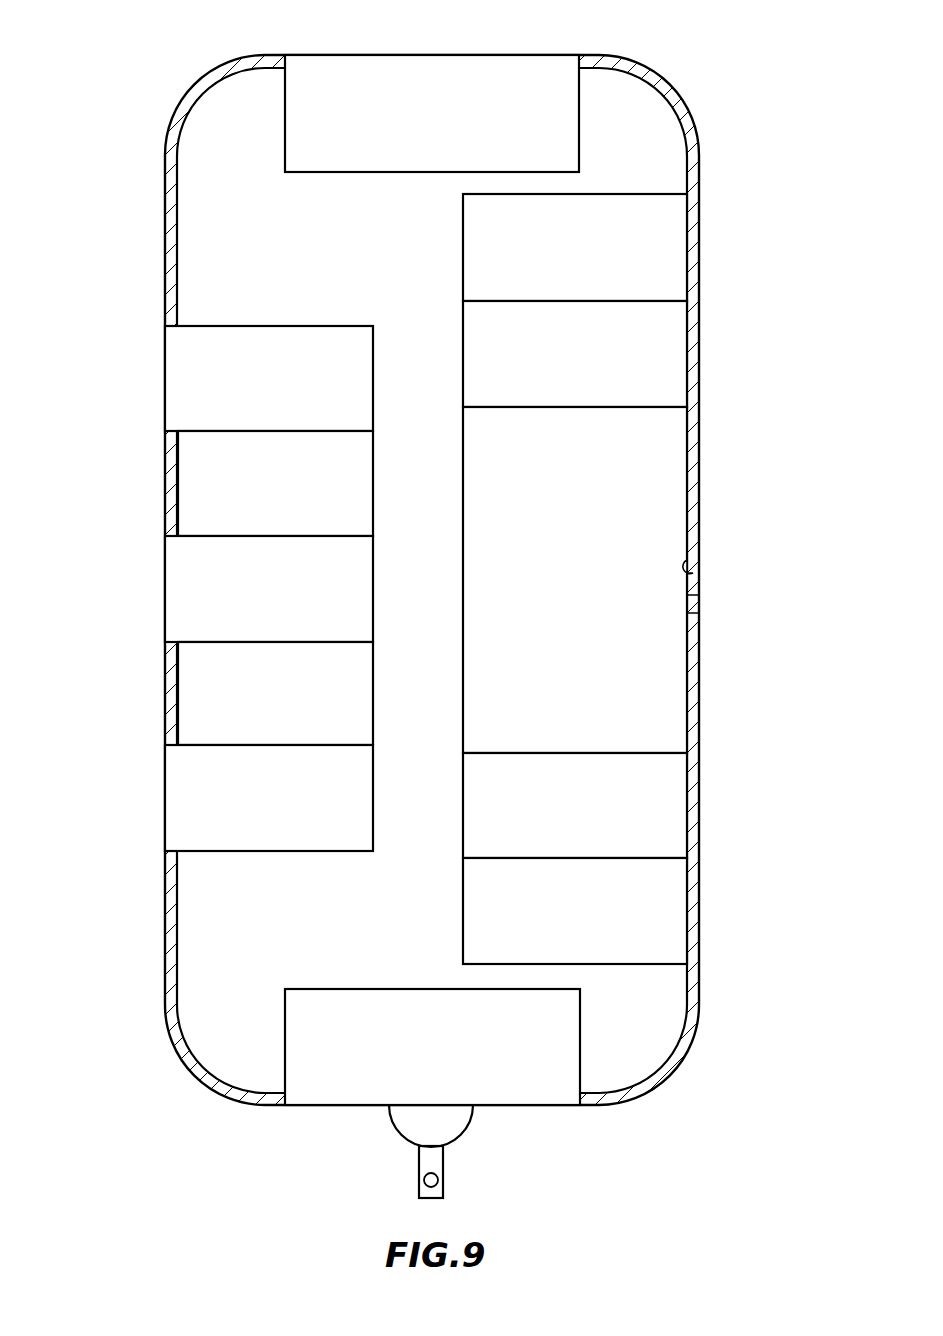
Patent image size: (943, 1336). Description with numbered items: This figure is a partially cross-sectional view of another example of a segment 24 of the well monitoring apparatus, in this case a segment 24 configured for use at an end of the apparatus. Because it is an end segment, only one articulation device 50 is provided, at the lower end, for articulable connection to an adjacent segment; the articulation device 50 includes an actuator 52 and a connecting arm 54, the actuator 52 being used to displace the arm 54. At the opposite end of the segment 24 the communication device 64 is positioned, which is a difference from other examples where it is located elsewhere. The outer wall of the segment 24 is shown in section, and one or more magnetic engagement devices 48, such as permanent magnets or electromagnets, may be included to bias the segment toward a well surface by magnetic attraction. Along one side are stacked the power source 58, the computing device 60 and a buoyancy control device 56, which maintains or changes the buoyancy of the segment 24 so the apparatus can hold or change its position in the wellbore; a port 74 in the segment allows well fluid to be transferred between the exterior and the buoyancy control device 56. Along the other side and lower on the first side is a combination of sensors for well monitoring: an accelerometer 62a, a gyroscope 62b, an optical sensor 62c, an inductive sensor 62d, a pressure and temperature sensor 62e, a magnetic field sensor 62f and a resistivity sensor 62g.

The segment 24 is at (735, 71).
The magnetic engagement device 48 is at (165, 252).
The articulation device 50 is at (270, 1031).
The actuator 52 is at (582, 1018).
The connecting arm 54 is at (444, 1157).
The buoyancy control device 56 is at (690, 612).
The power source 58 is at (690, 226).
The computing device 60 is at (688, 337).
The accelerometer 62a is at (690, 787).
The gyroscope 62b is at (690, 885).
The optical sensor 62c is at (165, 368).
The inductive sensor 62d is at (178, 470).
The pressure and temperature sensor 62e is at (165, 572).
The magnetic field sensor 62f is at (178, 682).
The resistivity sensor 62g is at (165, 782).
The communication device 64 is at (303, 172).
The port 74 is at (690, 573).